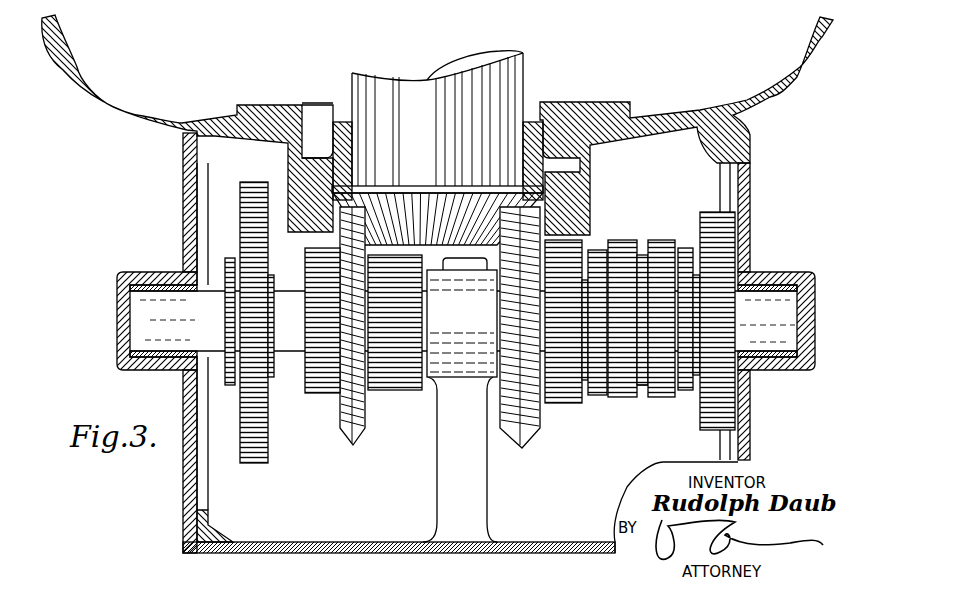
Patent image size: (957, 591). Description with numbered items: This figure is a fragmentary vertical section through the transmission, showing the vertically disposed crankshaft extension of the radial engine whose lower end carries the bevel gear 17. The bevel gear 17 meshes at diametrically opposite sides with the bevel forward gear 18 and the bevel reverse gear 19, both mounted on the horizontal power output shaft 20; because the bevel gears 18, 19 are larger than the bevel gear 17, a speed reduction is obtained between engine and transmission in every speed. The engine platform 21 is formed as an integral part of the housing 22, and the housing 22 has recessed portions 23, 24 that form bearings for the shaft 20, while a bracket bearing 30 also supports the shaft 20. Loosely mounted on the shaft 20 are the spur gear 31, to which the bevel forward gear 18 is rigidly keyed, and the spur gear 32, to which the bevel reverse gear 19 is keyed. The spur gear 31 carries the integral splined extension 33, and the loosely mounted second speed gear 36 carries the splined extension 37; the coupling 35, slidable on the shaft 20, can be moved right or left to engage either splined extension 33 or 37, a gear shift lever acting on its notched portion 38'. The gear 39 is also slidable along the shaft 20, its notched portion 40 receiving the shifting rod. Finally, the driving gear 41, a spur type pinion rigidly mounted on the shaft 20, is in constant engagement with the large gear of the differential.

The bevel gear 17 is at (425, 203).
The bevel forward gear 18 is at (540, 222).
The bevel reverse gear 19 is at (358, 442).
The power output shaft 20 is at (150, 330).
The engine platform 21 is at (72, 63).
The housing 22 is at (360, 536).
The recessed portion 23 is at (797, 355).
The recessed portion 24 is at (132, 275).
The bearing 30 is at (462, 317).
The spur gear 31 is at (577, 404).
The spur gear 32 is at (322, 393).
The splined extension 33 is at (600, 396).
The coupling 35 is at (628, 396).
The second speed gear 36 is at (722, 417).
The splined extension 37 is at (688, 390).
The notched portion 38' is at (641, 302).
The gear 39 is at (255, 458).
The notched portion 40 is at (238, 382).
The driving gear 41 is at (392, 377).